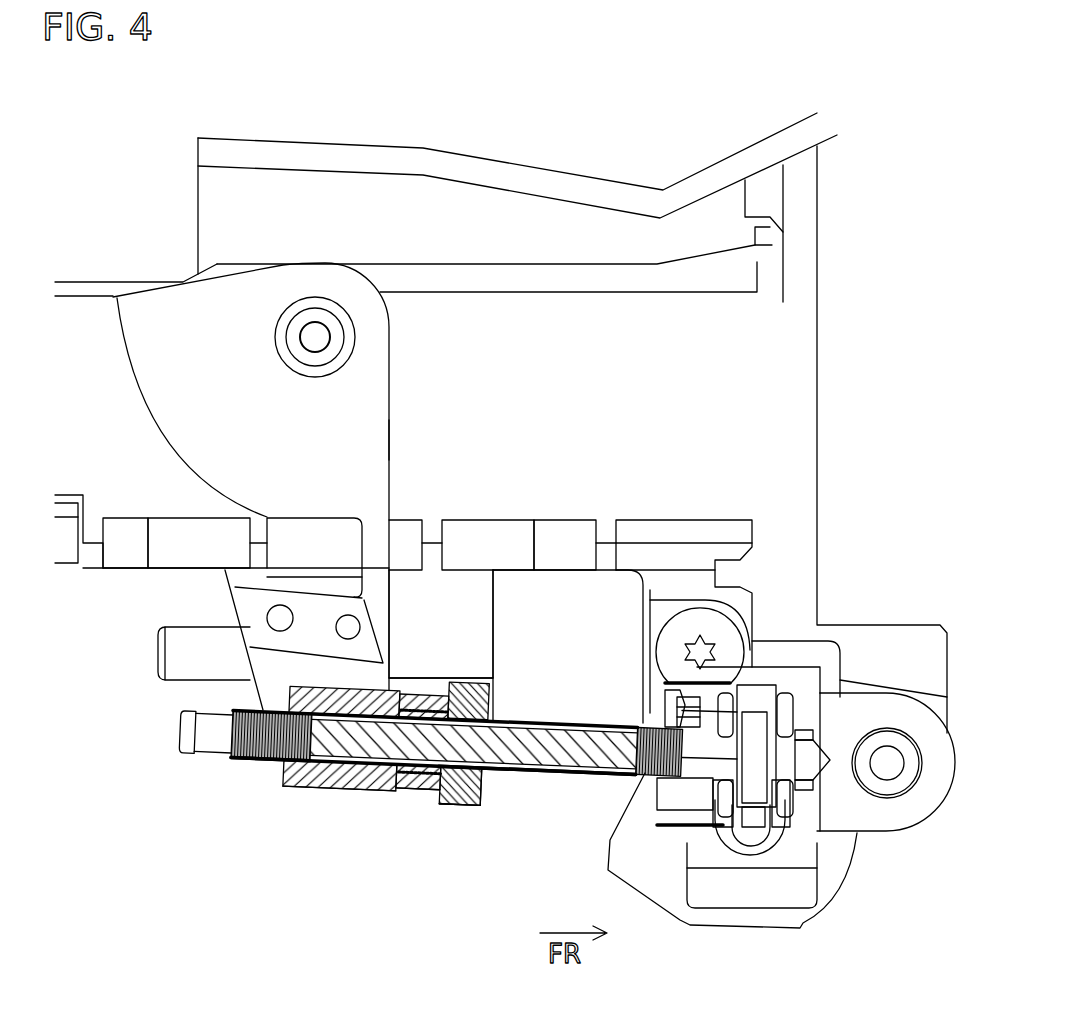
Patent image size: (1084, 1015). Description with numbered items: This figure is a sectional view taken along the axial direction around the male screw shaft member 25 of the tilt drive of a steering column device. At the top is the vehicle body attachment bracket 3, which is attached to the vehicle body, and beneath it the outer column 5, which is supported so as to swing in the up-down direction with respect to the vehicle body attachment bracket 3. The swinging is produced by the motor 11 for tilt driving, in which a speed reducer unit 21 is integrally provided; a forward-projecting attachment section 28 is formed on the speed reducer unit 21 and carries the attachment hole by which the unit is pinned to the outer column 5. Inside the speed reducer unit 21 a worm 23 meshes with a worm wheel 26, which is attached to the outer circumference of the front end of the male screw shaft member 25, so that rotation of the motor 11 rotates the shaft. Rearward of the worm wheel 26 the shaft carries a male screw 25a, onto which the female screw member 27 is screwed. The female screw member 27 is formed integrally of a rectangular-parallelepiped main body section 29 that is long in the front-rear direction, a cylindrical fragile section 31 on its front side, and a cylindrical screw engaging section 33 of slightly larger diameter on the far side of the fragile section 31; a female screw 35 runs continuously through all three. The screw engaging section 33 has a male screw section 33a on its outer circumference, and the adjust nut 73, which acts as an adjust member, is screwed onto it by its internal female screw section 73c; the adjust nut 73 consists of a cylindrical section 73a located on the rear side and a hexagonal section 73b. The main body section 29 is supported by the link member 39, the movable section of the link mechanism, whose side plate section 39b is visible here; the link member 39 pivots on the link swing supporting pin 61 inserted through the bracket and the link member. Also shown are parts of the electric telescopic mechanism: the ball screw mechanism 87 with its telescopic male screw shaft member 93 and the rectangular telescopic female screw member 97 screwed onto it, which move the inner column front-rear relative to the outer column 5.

The vehicle body attachment bracket 3 is at (337, 150).
The outer column 5 is at (447, 270).
The link member 39 is at (389, 380).
The side plate section 39b is at (360, 440).
The link swing supporting pin 61 is at (300, 337).
The telescopic female screw member 97 is at (512, 575).
The ball screw mechanism 87 is at (556, 570).
The speed reducer unit 21 is at (802, 670).
The attachment section 28 is at (922, 830).
The motor for tilt driving 11 is at (837, 880).
The worm 23 is at (758, 848).
The worm wheel 26 is at (752, 800).
The male screw shaft member 25 is at (237, 768).
The male screw 25a is at (270, 762).
The main body section 29 is at (318, 788).
The fragile section 31 is at (402, 782).
The female screw member 27 is at (343, 787).
The female screw section 73c is at (495, 718).
The hexagonal section 73b is at (450, 797).
The cylindrical section 73a is at (420, 790).
The adjust nut 73 is at (455, 807).
The female screw 35 is at (483, 757).
The screw engaging section 33 is at (480, 773).
The male screw section 33a is at (475, 800).
The telescopic male screw shaft member 93 is at (170, 655).